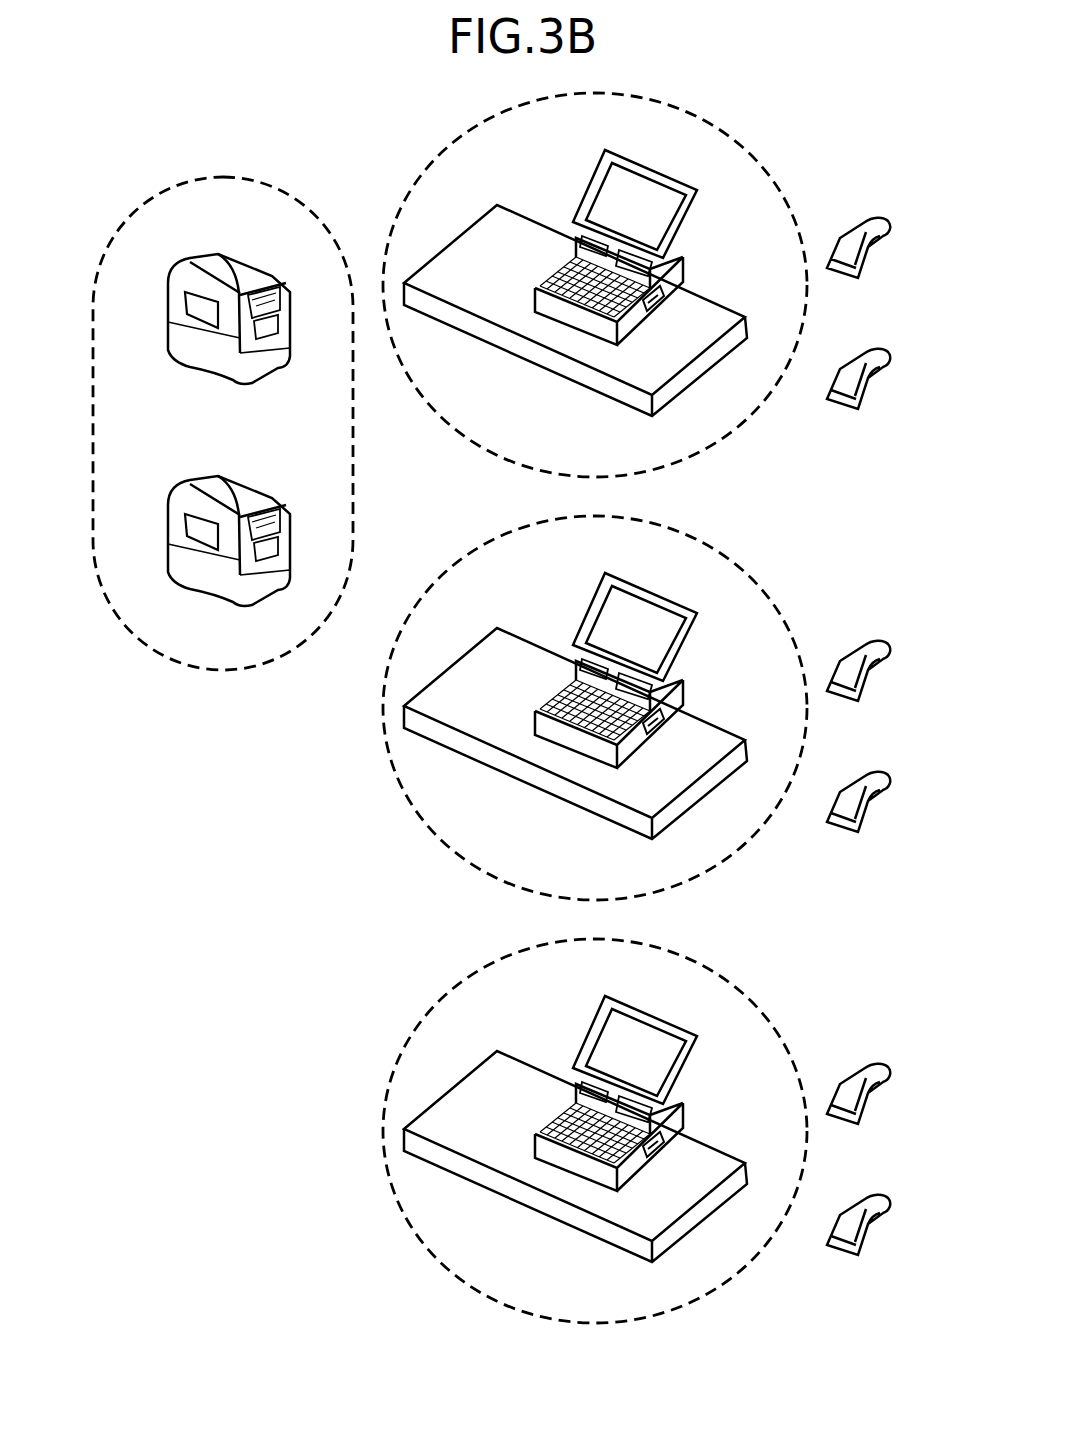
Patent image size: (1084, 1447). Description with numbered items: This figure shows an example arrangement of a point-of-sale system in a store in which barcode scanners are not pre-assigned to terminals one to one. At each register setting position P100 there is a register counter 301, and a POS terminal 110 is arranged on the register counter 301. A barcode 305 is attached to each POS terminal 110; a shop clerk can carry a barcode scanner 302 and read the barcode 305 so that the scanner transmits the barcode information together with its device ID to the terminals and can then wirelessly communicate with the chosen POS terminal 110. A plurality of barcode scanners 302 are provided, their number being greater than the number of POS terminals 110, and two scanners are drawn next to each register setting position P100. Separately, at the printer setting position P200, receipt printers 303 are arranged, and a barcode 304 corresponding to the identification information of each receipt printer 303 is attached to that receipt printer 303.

The register setting position P100 is at (785, 133).
The printer setting position P200 is at (253, 180).
The POS terminal 110 is at (582, 191).
The register counter 301 is at (708, 320).
The barcode scanner 302 is at (868, 226).
The receipt printer 303 is at (261, 243).
The barcode 304 is at (202, 310).
The barcode 305 is at (658, 310).